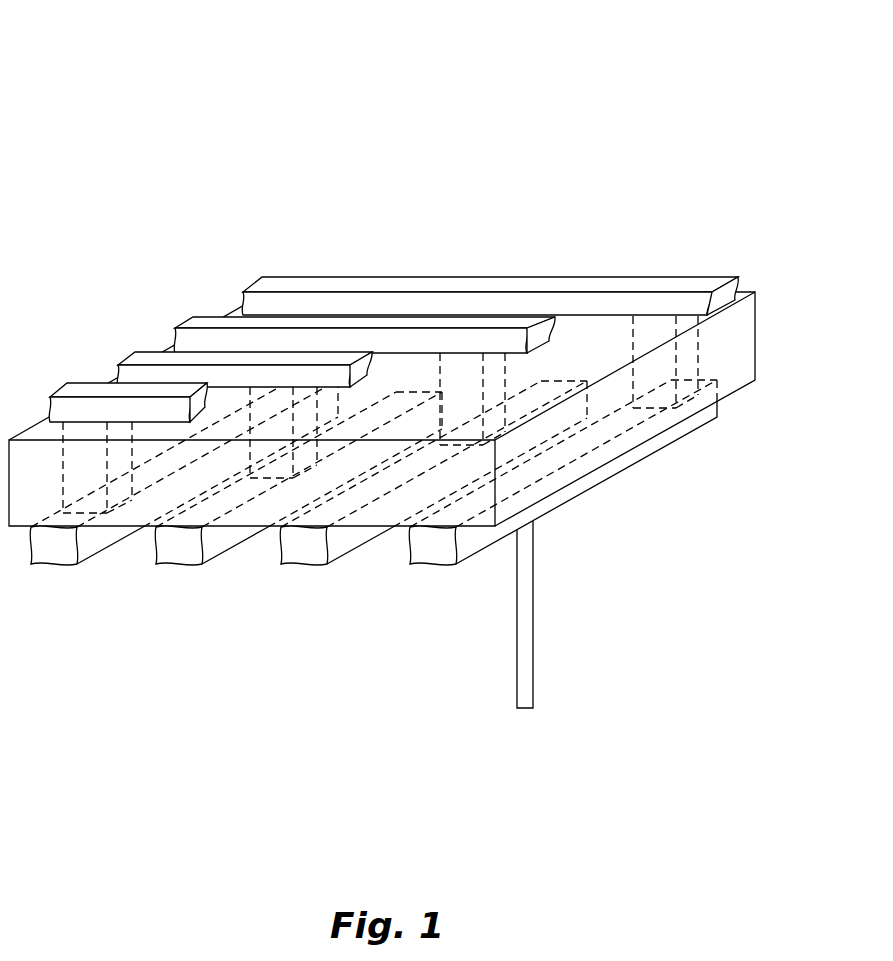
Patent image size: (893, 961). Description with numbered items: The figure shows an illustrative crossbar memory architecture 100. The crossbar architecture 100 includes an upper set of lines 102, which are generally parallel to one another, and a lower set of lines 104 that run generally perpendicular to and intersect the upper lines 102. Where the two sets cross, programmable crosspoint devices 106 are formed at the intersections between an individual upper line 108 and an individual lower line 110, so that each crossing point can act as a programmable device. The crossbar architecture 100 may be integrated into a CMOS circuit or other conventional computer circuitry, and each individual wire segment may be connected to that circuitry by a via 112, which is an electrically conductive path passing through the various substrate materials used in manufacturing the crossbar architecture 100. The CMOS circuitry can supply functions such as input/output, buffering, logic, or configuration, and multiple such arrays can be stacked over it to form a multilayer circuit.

The crossbar memory architecture 100 is at (382, 370).
The upper set of lines 102 is at (387, 310).
The lower set of lines 104 is at (375, 521).
The programmable crosspoint device 106 is at (658, 333).
The upper line 108 is at (490, 256).
The lower line 110 is at (668, 446).
The via 112 is at (516, 700).